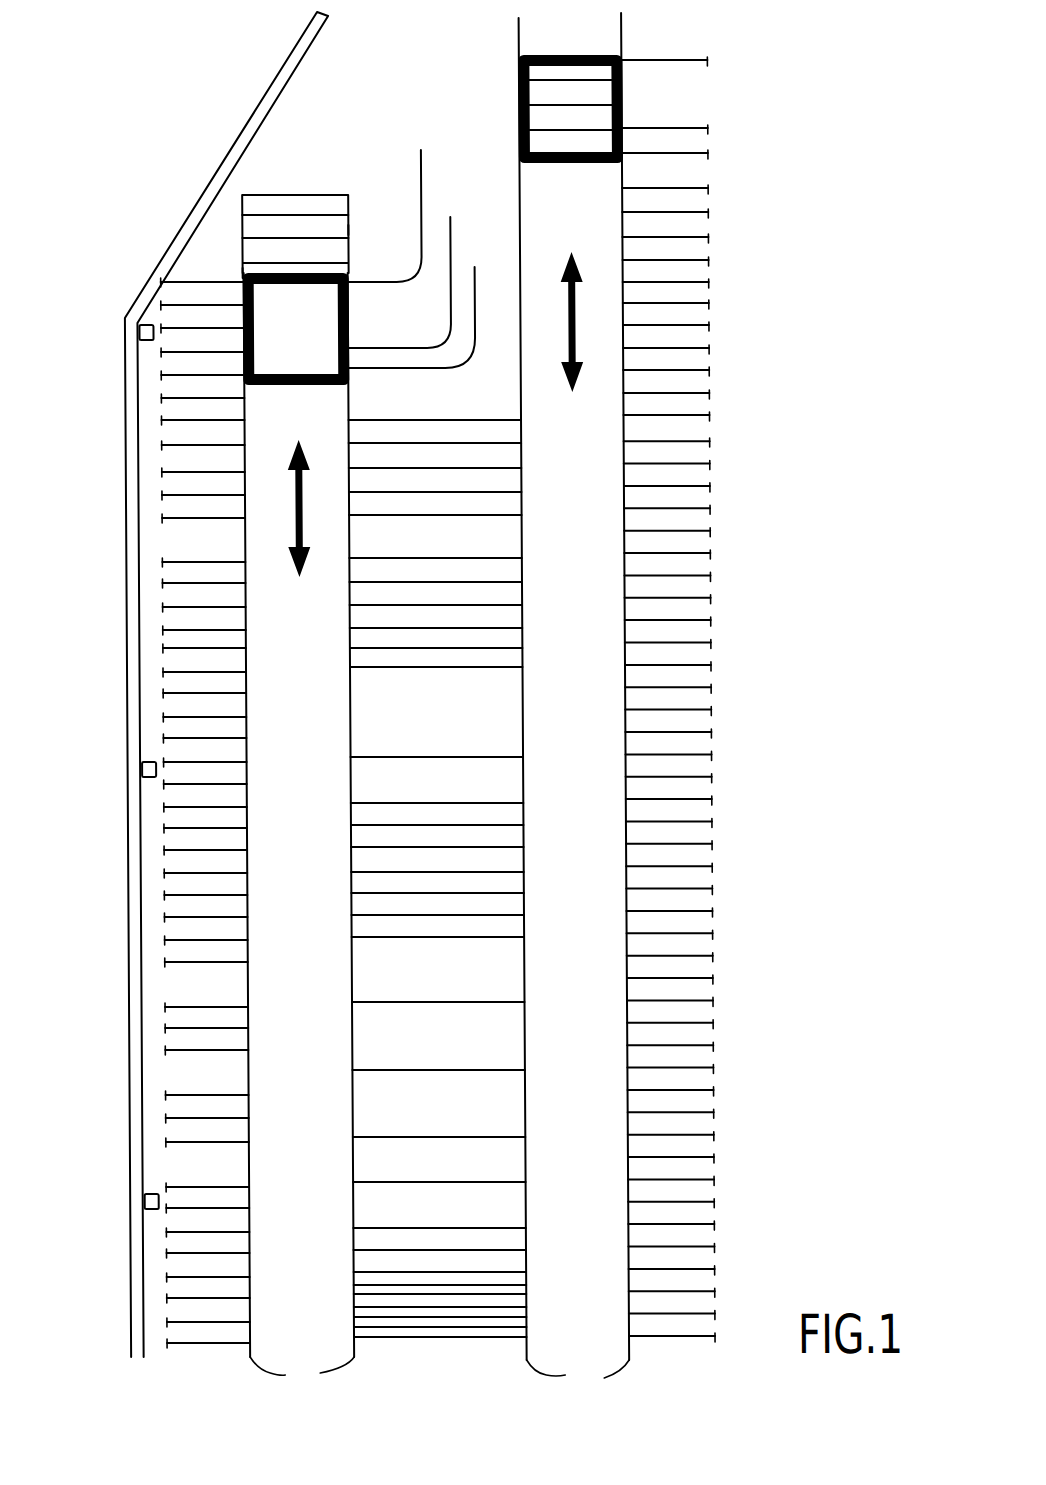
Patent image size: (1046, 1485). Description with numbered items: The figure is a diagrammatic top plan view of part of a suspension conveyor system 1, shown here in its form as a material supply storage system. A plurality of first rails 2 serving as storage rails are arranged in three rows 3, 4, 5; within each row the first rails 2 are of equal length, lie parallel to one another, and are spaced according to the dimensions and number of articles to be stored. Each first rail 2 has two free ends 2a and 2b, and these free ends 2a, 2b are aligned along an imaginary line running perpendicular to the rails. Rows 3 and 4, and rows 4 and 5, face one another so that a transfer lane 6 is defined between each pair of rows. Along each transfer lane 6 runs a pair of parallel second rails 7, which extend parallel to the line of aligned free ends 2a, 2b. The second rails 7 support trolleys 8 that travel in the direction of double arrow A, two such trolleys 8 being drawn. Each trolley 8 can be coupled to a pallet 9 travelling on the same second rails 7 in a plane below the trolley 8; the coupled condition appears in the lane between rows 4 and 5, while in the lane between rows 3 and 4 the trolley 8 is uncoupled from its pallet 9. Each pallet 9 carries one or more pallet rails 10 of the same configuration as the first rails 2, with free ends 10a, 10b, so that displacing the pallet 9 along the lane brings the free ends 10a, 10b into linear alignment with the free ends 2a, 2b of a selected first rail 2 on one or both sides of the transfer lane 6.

The suspension conveyor system 1 is at (770, 224).
The first rail 2 is at (424, 210).
The free end of first rail 2a is at (160, 737).
The free end of first rail 2b is at (234, 737).
The row 3 is at (194, 1368).
The row 4 is at (444, 1368).
The row 5 is at (668, 1365).
The transfer lane 6 is at (312, 1042).
The second rail 7 is at (439, 1379).
The trolley 8 is at (242, 222).
The pallet 9 is at (274, 193).
The pallet rail 10 is at (296, 215).
The free end of pallet rail 10a is at (236, 278).
The free end of pallet rail 10b is at (336, 230).